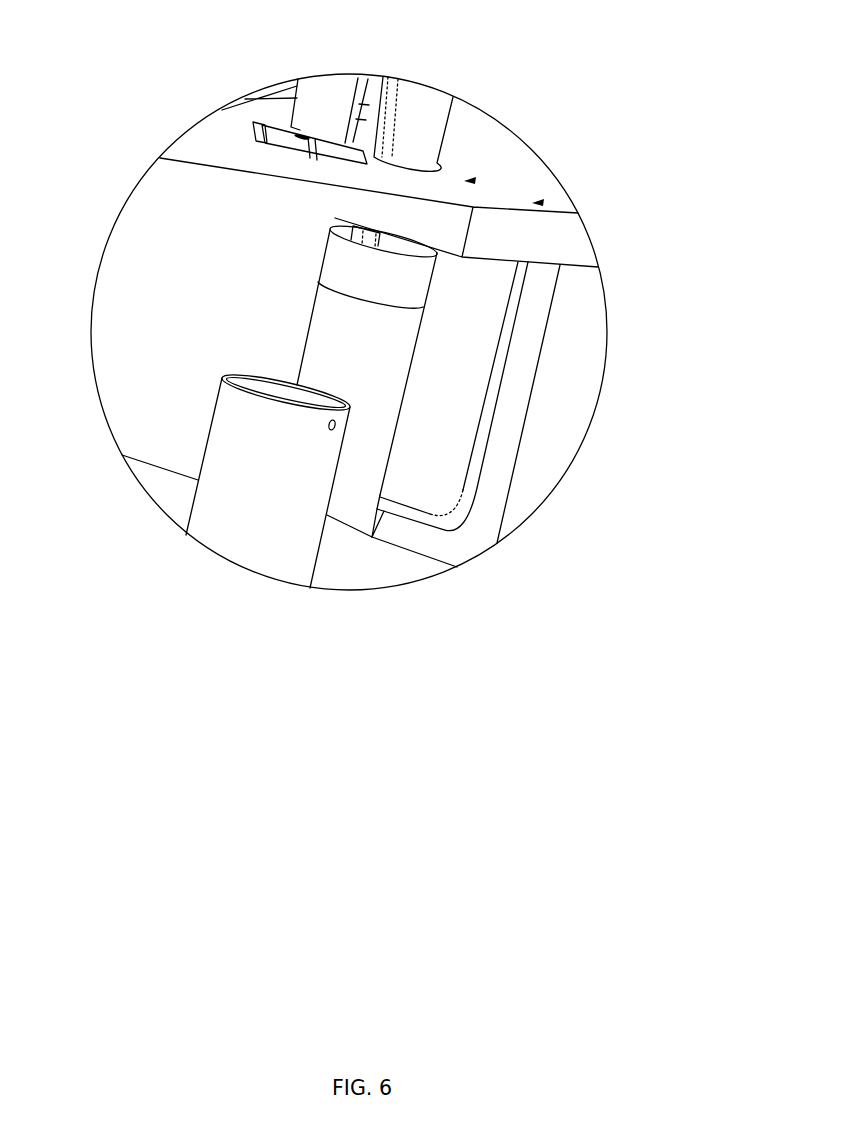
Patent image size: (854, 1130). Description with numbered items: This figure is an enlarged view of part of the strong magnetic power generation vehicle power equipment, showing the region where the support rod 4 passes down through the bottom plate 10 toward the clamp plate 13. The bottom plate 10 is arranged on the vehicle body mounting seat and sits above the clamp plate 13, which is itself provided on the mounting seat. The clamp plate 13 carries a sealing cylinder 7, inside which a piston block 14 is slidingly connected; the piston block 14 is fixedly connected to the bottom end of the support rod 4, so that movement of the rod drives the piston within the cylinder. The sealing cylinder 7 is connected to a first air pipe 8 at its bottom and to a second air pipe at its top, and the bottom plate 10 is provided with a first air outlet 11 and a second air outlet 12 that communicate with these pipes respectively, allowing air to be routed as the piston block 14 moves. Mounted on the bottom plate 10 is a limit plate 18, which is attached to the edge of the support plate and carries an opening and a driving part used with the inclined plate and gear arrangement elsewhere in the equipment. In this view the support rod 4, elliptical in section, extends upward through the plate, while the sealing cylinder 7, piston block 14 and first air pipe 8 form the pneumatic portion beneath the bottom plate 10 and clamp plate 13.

The support rod 4 is at (428, 130).
The sealing cylinder 7 is at (237, 518).
The first air pipe 8 is at (400, 512).
The bottom plate 10 is at (195, 150).
The first air outlet 11 is at (538, 202).
The second air outlet 12 is at (470, 180).
The clamp plate 13 is at (130, 418).
The piston block 14 is at (407, 283).
The limit plate 18 is at (338, 110).